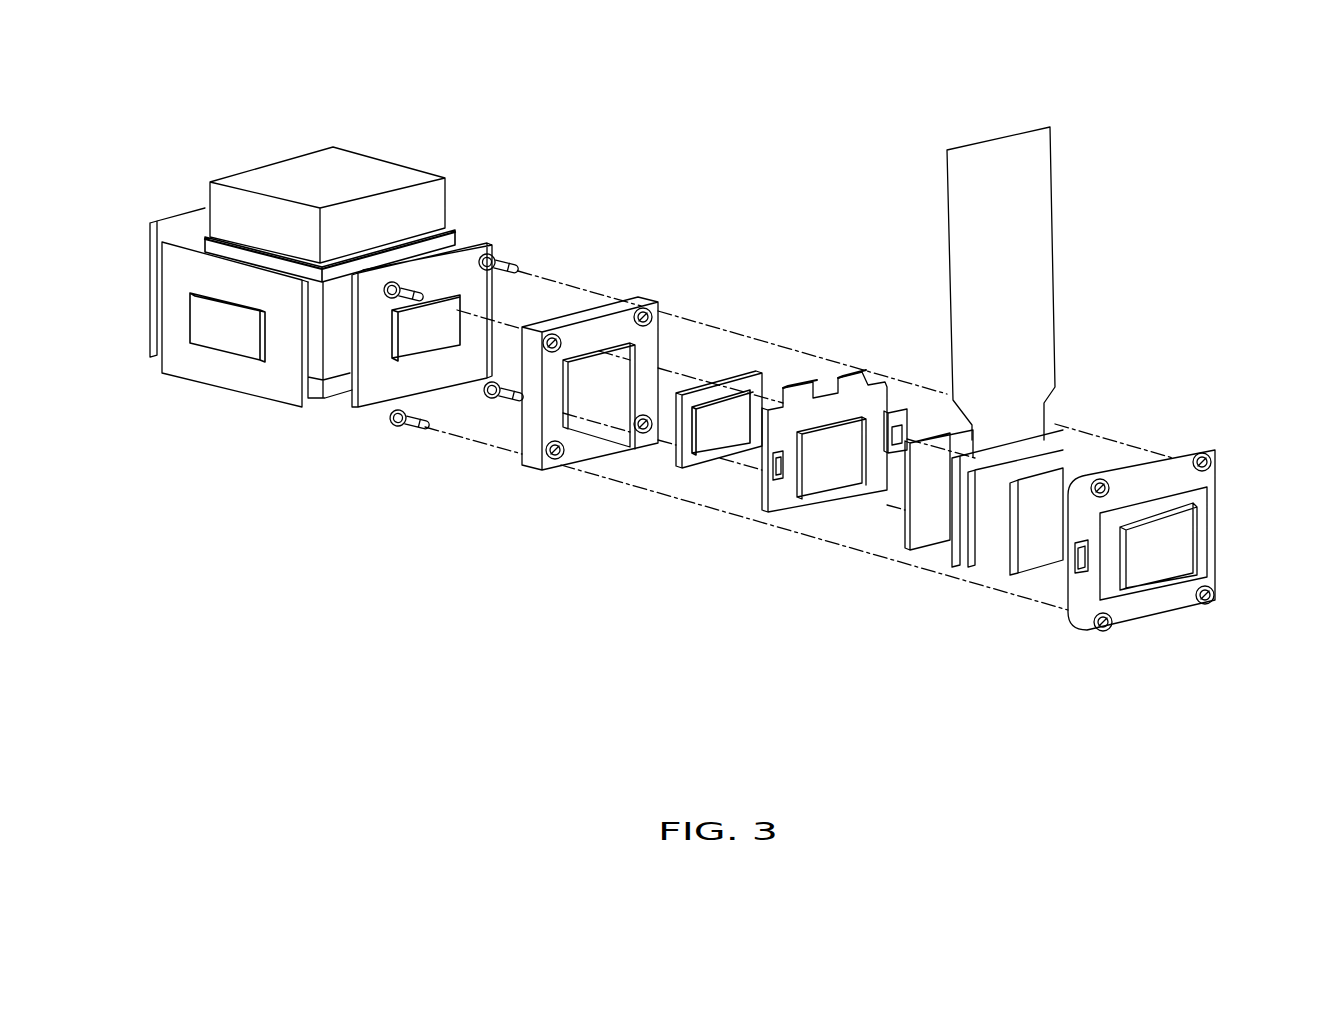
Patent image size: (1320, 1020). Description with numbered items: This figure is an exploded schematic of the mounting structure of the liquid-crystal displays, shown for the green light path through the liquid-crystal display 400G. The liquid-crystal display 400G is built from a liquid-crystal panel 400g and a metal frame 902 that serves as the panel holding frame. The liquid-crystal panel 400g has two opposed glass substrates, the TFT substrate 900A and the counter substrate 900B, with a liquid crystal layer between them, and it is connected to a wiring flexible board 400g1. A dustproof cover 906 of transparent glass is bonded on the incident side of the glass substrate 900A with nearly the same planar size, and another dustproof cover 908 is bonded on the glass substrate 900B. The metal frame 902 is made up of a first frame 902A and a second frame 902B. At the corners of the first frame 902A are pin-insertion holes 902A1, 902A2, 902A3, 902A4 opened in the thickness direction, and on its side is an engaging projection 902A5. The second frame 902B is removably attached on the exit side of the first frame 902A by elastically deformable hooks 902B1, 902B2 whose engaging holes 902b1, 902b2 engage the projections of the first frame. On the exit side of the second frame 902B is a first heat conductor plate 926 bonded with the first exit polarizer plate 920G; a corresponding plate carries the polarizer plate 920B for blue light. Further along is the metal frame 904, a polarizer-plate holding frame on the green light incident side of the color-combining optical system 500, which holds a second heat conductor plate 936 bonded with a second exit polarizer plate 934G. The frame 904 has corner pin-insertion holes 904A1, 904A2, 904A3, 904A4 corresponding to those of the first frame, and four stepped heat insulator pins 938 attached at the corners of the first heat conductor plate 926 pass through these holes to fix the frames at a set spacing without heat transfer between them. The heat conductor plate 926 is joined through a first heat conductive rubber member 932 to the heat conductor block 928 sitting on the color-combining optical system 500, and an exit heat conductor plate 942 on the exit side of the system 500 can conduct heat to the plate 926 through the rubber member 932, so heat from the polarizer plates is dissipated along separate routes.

The heat conductor block 928 is at (283, 165).
The first heat conductive rubber member 932 is at (233, 254).
The color-combining optical system 500 is at (335, 342).
The exit heat conductor plate 942 is at (185, 212).
The first heat conductor plate 926 is at (178, 365).
The first exit polarizer plate 920B is at (248, 355).
The first exit polarizer plate 920G is at (437, 332).
The heat insulator pins 938 is at (420, 286).
The metal frame 904 is at (612, 398).
The pin-insertion hole 904A1 is at (555, 333).
The pin-insertion hole 904A2 is at (645, 308).
The pin-insertion hole 904A3 is at (560, 460).
The pin-insertion hole 904A4 is at (641, 435).
The second heat conductor plate 936 is at (718, 463).
The second exit polarizer plate 934G is at (716, 440).
The second frame 902B is at (835, 482).
The elastically deformable hook 902B1 is at (782, 503).
The engaging hole 902b1 is at (777, 482).
The elastically deformable hook 902B2 is at (889, 412).
The engaging hole 902b2 is at (904, 440).
The dustproof cover 906 is at (903, 542).
The wiring flexible board 400g1 is at (1037, 228).
The liquid-crystal display 400G is at (1107, 169).
The TFT substrate 900A is at (955, 565).
The counter substrate 900B is at (990, 553).
The dustproof cover 908 is at (1038, 562).
The first frame 902A is at (1159, 550).
The pin-insertion hole 902A1 is at (1102, 478).
The pin-insertion hole 902A2 is at (1213, 452).
The pin-insertion hole 902A3 is at (1103, 633).
The pin-insertion hole 902A4 is at (1212, 605).
The engaging projection 902A5 is at (1105, 596).
The metal frame 902 is at (1070, 718).
The liquid-crystal panel 400g is at (1006, 658).